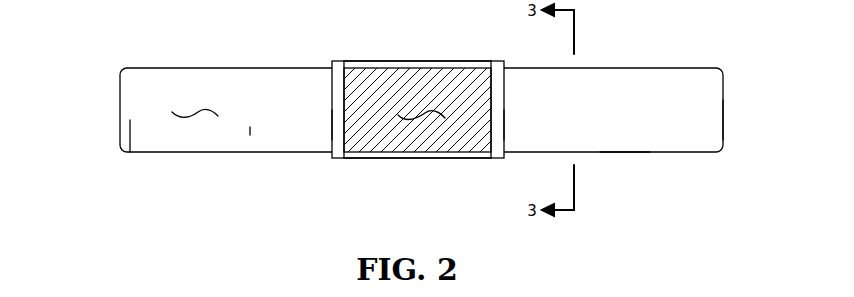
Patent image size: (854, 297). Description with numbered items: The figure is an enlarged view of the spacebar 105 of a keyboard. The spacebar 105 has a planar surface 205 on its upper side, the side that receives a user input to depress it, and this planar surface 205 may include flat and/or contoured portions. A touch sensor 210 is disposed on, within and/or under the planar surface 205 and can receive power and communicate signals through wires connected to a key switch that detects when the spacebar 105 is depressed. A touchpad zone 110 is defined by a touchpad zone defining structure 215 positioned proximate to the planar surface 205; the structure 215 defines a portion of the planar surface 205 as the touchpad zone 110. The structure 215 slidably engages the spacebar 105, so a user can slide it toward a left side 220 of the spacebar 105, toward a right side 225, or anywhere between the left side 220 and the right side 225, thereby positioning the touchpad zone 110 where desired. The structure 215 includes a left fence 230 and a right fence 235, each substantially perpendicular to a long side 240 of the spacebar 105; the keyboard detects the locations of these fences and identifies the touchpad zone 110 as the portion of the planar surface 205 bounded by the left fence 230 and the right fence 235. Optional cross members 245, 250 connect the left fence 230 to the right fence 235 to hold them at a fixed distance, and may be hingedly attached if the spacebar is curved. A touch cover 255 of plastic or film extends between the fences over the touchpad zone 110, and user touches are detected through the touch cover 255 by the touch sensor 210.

The spacebar 105 is at (120, 86).
The touchpad zone 110 is at (380, 92).
The planar surface 205 is at (200, 115).
The touch sensor 210 is at (250, 127).
The touchpad zone defining structure 215 is at (324, 92).
The left side 220 is at (130, 120).
The right side 225 is at (712, 127).
The left fence 230 is at (338, 128).
The right fence 235 is at (500, 125).
The long side 240 is at (626, 152).
The cross member 245 is at (472, 65).
The cross member 250 is at (370, 152).
The touch cover 255 is at (418, 120).